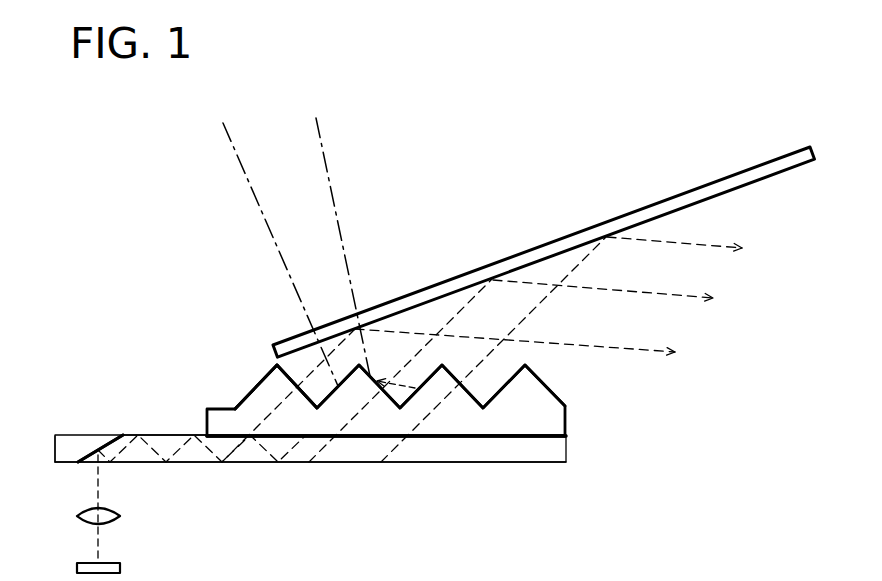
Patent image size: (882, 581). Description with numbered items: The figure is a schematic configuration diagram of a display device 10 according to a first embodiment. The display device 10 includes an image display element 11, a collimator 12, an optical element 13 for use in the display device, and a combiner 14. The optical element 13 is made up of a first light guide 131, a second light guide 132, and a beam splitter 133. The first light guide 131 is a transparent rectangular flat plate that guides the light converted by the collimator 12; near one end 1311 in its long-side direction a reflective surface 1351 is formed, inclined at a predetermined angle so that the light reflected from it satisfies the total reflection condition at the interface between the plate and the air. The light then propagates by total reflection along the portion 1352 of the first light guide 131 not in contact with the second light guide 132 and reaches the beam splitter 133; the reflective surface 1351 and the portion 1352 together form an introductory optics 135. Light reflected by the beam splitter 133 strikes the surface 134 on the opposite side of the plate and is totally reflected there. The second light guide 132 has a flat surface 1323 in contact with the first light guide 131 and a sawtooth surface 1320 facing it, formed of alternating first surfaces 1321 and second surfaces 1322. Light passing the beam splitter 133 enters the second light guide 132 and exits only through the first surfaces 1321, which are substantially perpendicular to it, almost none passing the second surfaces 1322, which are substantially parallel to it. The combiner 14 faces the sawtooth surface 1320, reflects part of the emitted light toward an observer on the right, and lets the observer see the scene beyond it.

The display device 10 is at (140, 160).
The image display element 11 is at (120, 567).
The collimator 12 is at (120, 513).
The optical element for use in the display device 13 is at (702, 436).
The combiner 14 is at (690, 202).
The first light guide 131 is at (515, 448).
The one end 1311 is at (55, 450).
The second light guide 132 is at (510, 423).
The sawtooth surface 1320 is at (127, 292).
The first surface 1321 is at (295, 383).
The second surface 1322 is at (257, 390).
The flat surface 1323 is at (537, 430).
The beam splitter 133 is at (443, 437).
The surface 134 is at (340, 463).
The introductory optics 135 is at (132, 385).
The reflective surface 1351 is at (93, 452).
The portion 1352 is at (148, 433).